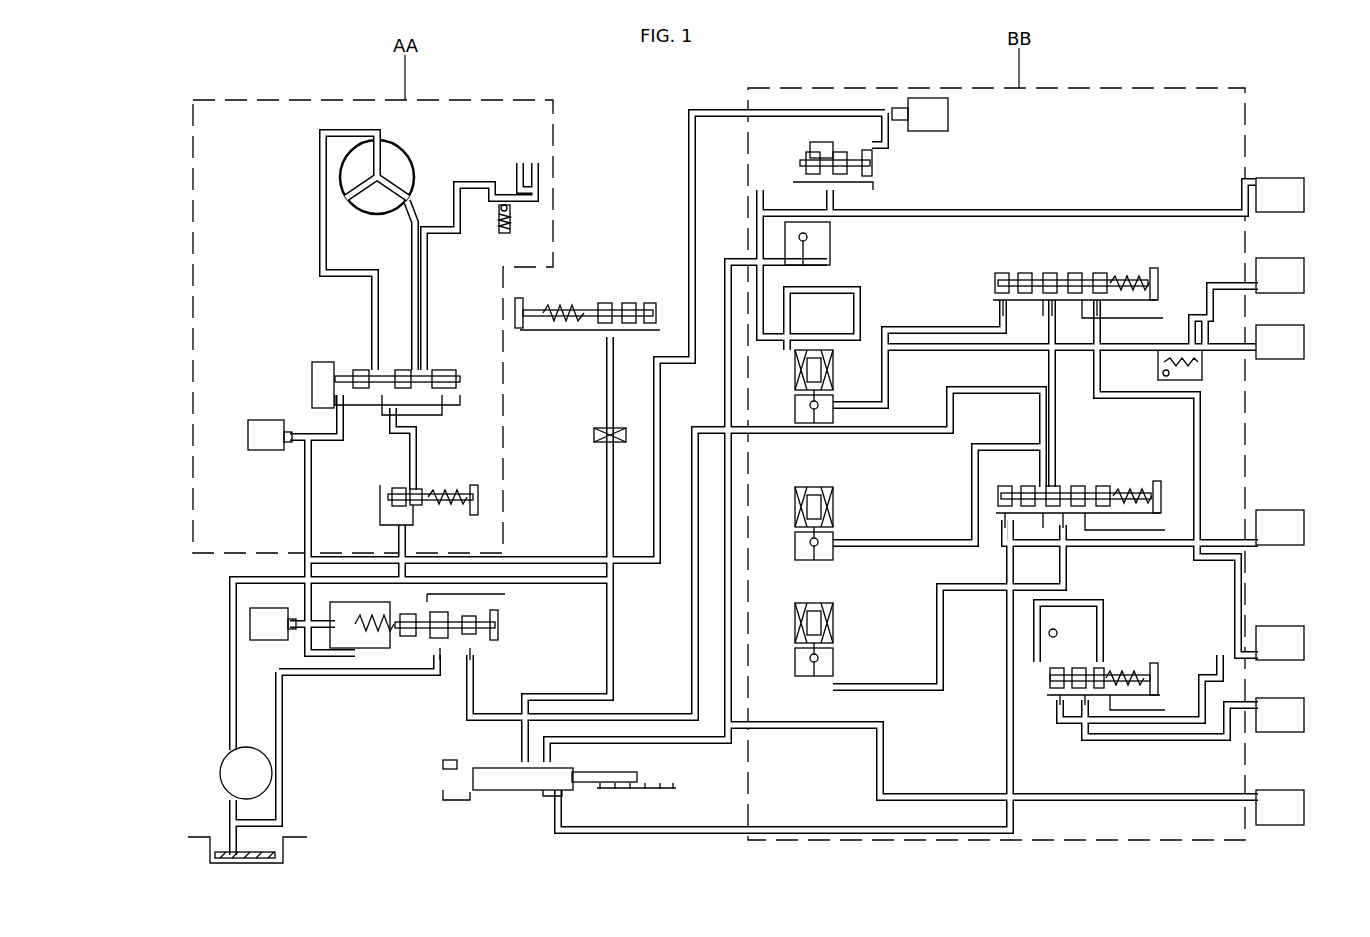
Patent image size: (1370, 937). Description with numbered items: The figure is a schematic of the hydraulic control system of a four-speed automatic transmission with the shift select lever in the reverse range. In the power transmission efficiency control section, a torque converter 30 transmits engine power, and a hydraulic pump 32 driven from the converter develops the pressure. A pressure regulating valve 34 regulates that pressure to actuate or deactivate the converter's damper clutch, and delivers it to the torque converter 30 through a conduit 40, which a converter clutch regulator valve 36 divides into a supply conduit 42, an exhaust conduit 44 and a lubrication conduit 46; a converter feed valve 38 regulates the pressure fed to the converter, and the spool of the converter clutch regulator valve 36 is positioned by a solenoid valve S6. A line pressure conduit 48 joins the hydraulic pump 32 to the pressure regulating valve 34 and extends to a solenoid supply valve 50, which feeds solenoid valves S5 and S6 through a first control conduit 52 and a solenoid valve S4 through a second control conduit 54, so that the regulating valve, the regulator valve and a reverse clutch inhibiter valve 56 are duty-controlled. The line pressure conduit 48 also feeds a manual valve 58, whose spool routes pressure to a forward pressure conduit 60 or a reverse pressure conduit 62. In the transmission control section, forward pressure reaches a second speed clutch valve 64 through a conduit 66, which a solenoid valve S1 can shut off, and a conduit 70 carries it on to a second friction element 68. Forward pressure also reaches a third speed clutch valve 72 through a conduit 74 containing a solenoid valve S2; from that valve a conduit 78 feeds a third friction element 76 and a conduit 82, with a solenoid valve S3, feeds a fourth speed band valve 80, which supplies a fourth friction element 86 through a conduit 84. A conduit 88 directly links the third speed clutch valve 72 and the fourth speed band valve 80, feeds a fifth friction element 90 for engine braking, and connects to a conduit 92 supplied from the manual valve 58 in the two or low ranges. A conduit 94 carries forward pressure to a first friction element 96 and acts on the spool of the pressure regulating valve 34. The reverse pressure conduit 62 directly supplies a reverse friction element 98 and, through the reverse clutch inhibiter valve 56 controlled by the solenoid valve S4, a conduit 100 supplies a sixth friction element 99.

The torque converter 30 is at (420, 152).
The supply conduit 42 is at (322, 250).
The exhaust conduit 44 is at (420, 300).
The lubrication conduit 46 is at (430, 268).
The converter clutch regulator valve 36 is at (450, 362).
The converter feed valve 38 is at (455, 482).
The conduit 40 is at (398, 540).
The line pressure conduit 48 is at (262, 578).
The pressure regulating valve 34 is at (508, 648).
The hydraulic pump 32 is at (220, 770).
The manual valve 58 is at (518, 800).
The solenoid supply valve 50 is at (618, 284).
The second control conduit 54 is at (688, 158).
The first control conduit 52 is at (643, 566).
The forward pressure conduit 60 is at (690, 640).
The reverse pressure conduit 62 is at (708, 746).
The conduit 92 is at (808, 826).
The conduit 94 is at (1068, 792).
The reverse clutch inhibiter valve 56 is at (896, 162).
The conduit 100 is at (862, 304).
The conduit 66 is at (890, 378).
The conduit 74 is at (968, 503).
The conduit 82 is at (935, 620).
The conduit 88 is at (1003, 620).
The second speed clutch valve 64 is at (1166, 268).
The conduit 70 is at (1180, 325).
The third speed clutch valve 72 is at (1122, 480).
The conduit 78 is at (1220, 538).
The fourth speed band valve 80 is at (1170, 660).
The conduit 84 is at (1182, 716).
The reverse friction element 98 is at (1304, 195).
The sixth friction element 99 is at (1304, 276).
The second friction element 68 is at (1304, 342).
The third friction element 76 is at (1304, 527).
The fourth friction element 86 is at (1304, 643).
The fifth friction element 90 is at (1304, 715).
The first friction element 96 is at (1304, 808).
The solenoid valve S1 is at (794, 366).
The solenoid valve S2 is at (794, 503).
The solenoid valve S3 is at (794, 620).
The solenoid valve S4 is at (920, 114).
The solenoid valve S5 is at (273, 624).
The solenoid valve S6 is at (270, 435).